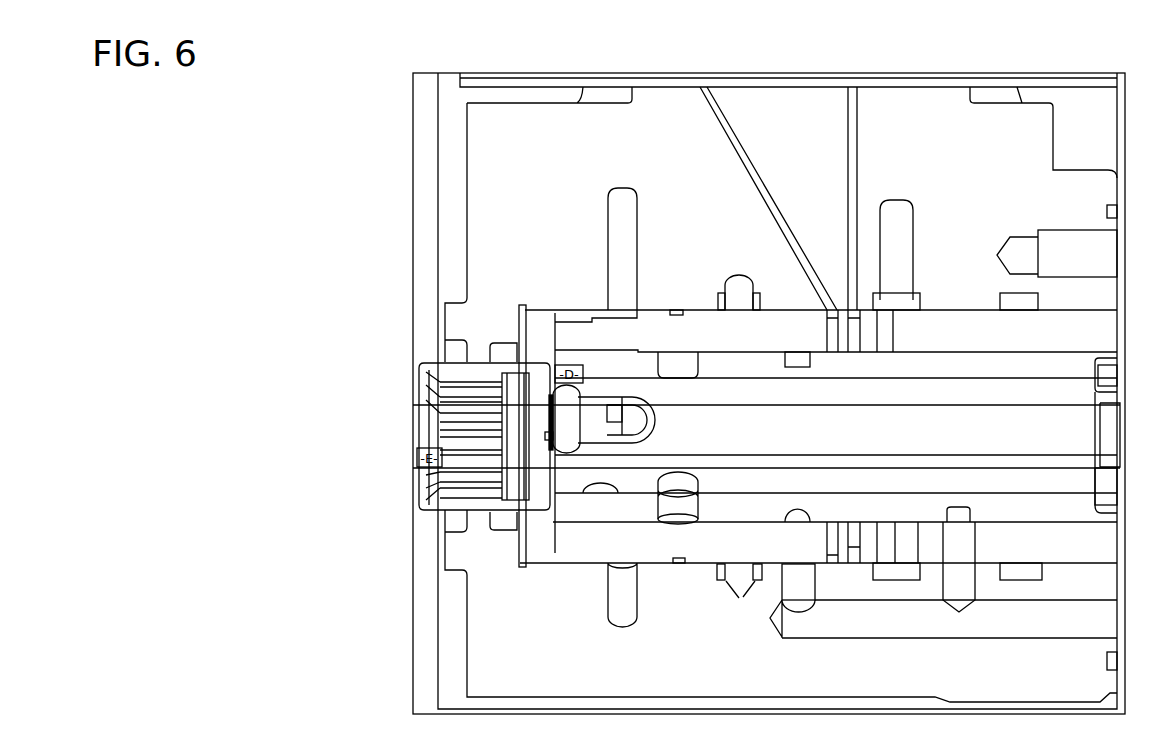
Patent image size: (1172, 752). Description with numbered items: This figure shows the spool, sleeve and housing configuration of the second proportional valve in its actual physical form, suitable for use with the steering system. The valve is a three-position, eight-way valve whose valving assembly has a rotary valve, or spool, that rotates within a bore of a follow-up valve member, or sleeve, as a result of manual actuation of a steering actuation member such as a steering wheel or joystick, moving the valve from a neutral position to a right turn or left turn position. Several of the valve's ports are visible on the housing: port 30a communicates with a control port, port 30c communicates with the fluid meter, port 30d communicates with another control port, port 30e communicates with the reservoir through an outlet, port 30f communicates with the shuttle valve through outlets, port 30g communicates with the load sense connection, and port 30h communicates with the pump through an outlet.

The port 30a is at (736, 590).
The port 30c is at (797, 600).
The port 30d is at (1018, 302).
The port 30e is at (622, 221).
The port 30f is at (856, 87).
The port 30g is at (703, 88).
The port 30h is at (902, 237).